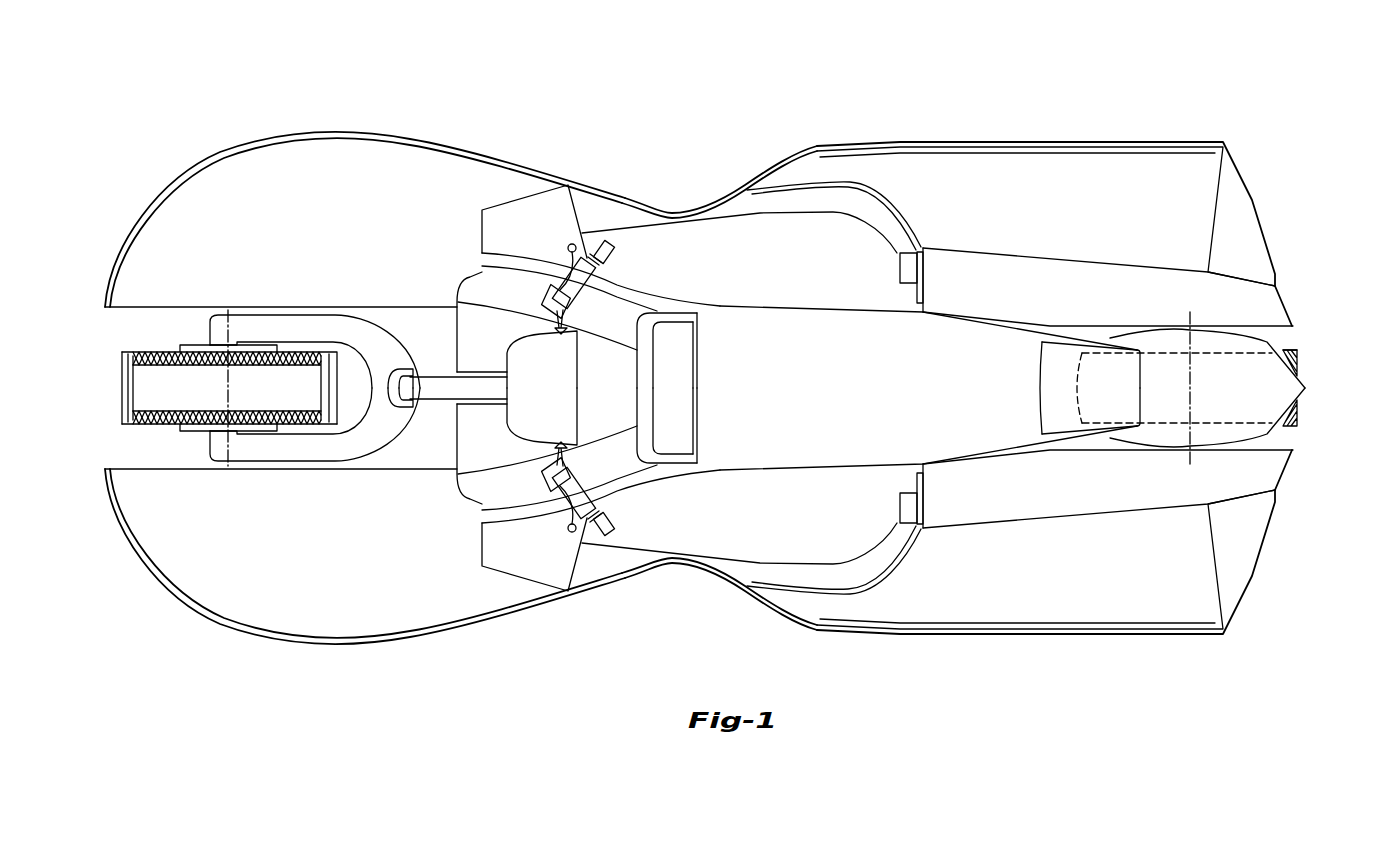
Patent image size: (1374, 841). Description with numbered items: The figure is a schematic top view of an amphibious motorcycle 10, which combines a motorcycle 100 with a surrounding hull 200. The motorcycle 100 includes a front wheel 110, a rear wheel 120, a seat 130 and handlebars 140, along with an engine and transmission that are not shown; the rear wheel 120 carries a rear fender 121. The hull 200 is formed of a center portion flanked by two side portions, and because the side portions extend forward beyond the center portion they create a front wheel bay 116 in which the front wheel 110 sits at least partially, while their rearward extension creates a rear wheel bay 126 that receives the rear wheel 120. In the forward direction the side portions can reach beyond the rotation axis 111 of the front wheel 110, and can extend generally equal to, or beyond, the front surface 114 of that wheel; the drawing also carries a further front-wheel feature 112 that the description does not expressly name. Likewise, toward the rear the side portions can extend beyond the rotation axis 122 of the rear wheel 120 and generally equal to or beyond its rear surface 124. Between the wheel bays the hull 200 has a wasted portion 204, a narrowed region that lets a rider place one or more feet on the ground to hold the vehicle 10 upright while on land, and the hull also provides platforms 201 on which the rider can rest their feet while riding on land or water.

The amphibious motorcycle 10 is at (649, 150).
The motorcycle 100 is at (787, 301).
The front wheel 110 is at (117, 414).
The rotation axis 111 is at (237, 452).
The actuator rod 112 is at (438, 404).
The front surface 114 is at (118, 388).
The front wheel bay 116 is at (119, 329).
The rear wheel 120 is at (1300, 354).
The rear fender 121 is at (1238, 392).
The rotation axis 122 is at (1192, 400).
The rear surface 124 is at (1299, 411).
The rear wheel bay 126 is at (1290, 334).
The seat 130 is at (898, 397).
The handlebars 140 is at (618, 519).
The hull 200 is at (1062, 132).
The platforms 201 is at (836, 263).
The wasted portion 204 is at (720, 175).